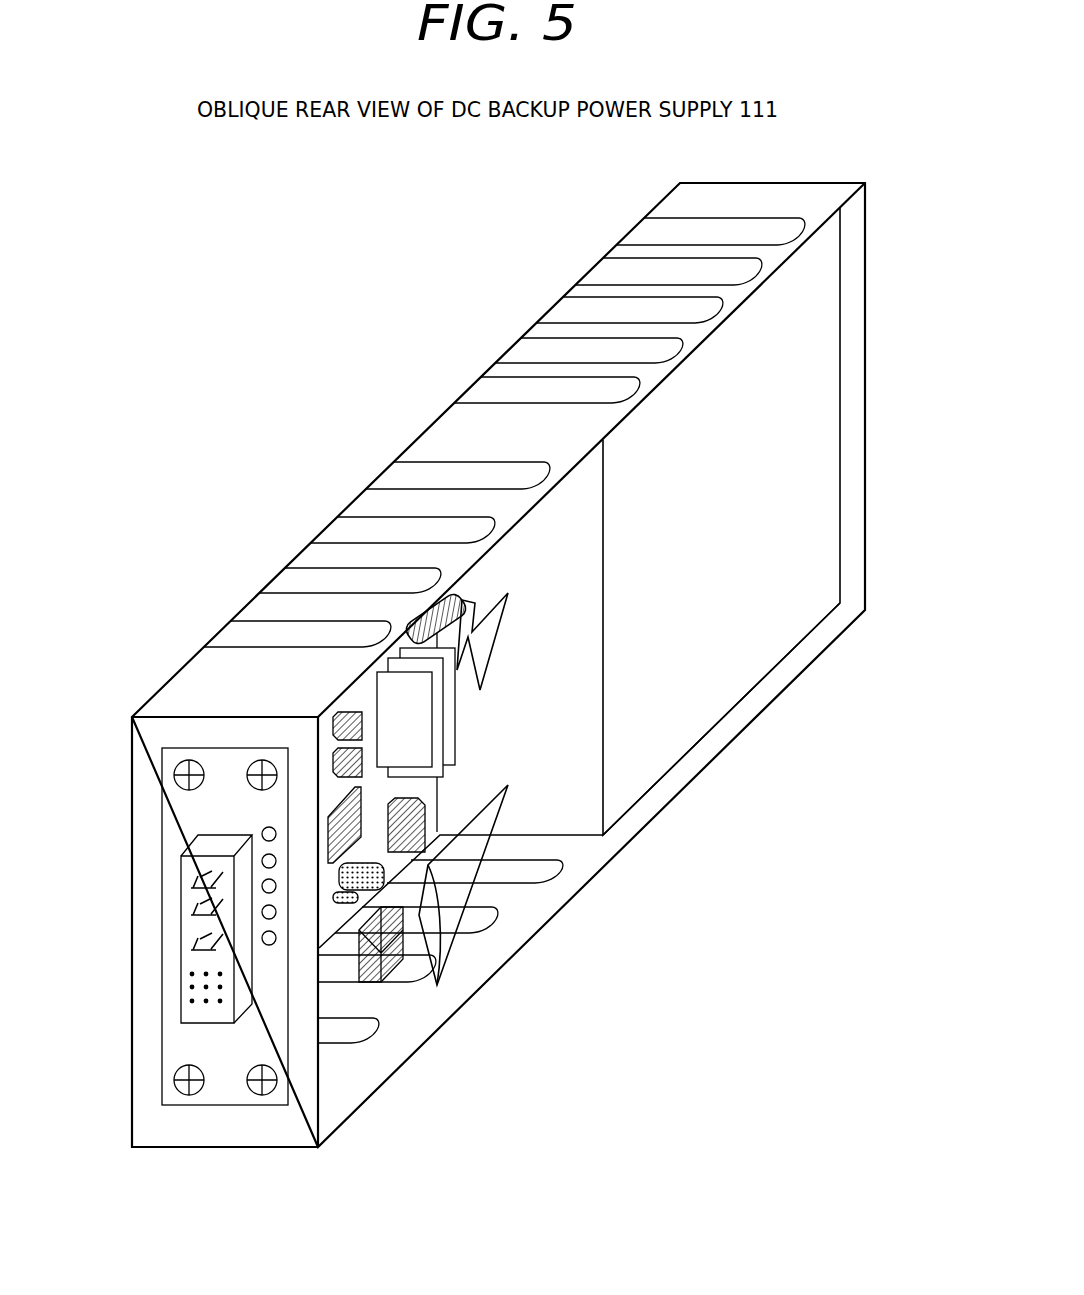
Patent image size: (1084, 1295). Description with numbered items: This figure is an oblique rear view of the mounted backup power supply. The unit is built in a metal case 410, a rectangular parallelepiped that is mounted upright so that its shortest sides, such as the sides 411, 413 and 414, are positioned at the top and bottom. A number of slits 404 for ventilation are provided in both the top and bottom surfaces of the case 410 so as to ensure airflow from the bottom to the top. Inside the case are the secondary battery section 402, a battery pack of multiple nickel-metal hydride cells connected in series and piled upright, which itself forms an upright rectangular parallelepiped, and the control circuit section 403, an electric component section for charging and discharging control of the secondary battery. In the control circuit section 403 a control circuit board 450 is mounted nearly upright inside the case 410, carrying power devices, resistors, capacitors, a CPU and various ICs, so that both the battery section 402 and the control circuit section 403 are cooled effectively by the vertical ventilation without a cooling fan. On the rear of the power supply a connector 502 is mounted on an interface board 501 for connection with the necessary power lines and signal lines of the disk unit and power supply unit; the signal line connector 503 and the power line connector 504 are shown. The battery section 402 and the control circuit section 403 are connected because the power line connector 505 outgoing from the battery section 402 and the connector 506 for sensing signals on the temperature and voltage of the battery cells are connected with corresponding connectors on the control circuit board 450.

The secondary battery section 402 is at (718, 688).
The control circuit section 403 is at (515, 888).
The slits (vents) 404 is at (650, 237).
The metal case 410 is at (457, 437).
The shortest side of the rectangular parallelepiped 411 is at (765, 183).
The shortest side of the rectangular parallelepiped 413 is at (205, 713).
The shortest side of the rectangular parallelepiped 414 is at (182, 1148).
The control circuit board 450 is at (410, 790).
The interface board 501 is at (163, 1065).
The connector 502 is at (183, 860).
The signal line connector 503 is at (190, 982).
The power line connector 504 is at (184, 916).
The power line connector 505 is at (385, 985).
The connector for sensing signals 506 is at (463, 597).